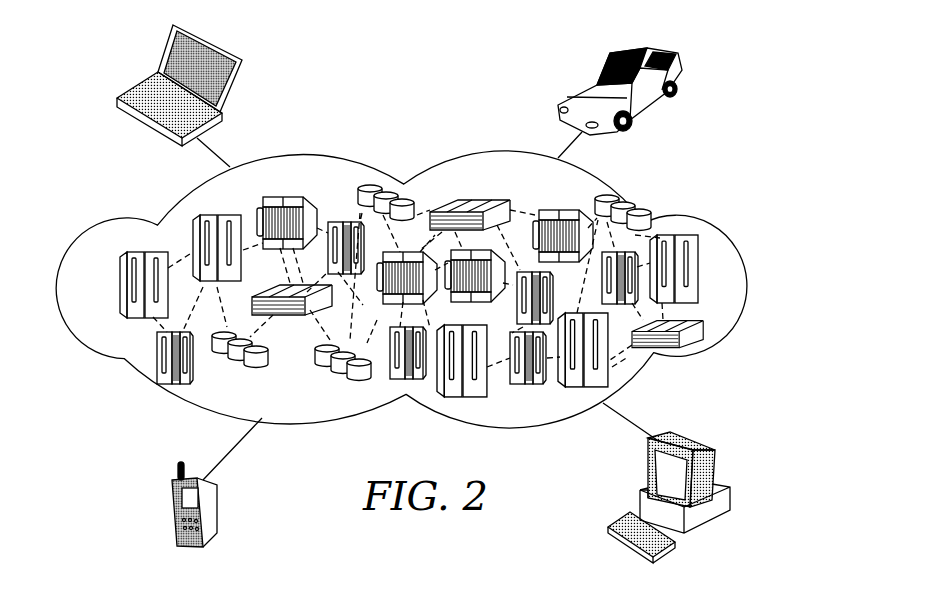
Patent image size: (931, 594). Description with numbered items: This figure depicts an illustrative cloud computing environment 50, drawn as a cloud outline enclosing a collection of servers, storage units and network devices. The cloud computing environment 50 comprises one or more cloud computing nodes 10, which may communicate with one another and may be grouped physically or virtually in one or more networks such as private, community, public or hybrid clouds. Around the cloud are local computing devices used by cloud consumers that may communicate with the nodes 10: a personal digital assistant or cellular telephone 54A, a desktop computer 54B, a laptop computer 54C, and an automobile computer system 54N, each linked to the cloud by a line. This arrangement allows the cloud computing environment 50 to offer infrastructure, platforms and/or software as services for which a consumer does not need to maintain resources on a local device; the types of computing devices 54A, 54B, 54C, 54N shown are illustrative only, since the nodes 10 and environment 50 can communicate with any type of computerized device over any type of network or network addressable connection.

The cloud computing environment 50 is at (720, 237).
The cloud computing nodes 10 is at (692, 348).
The personal digital assistant or cellular telephone 54A is at (215, 482).
The desktop computer 54B is at (642, 478).
The laptop computer 54C is at (142, 76).
The automobile computer system 54N is at (572, 82).